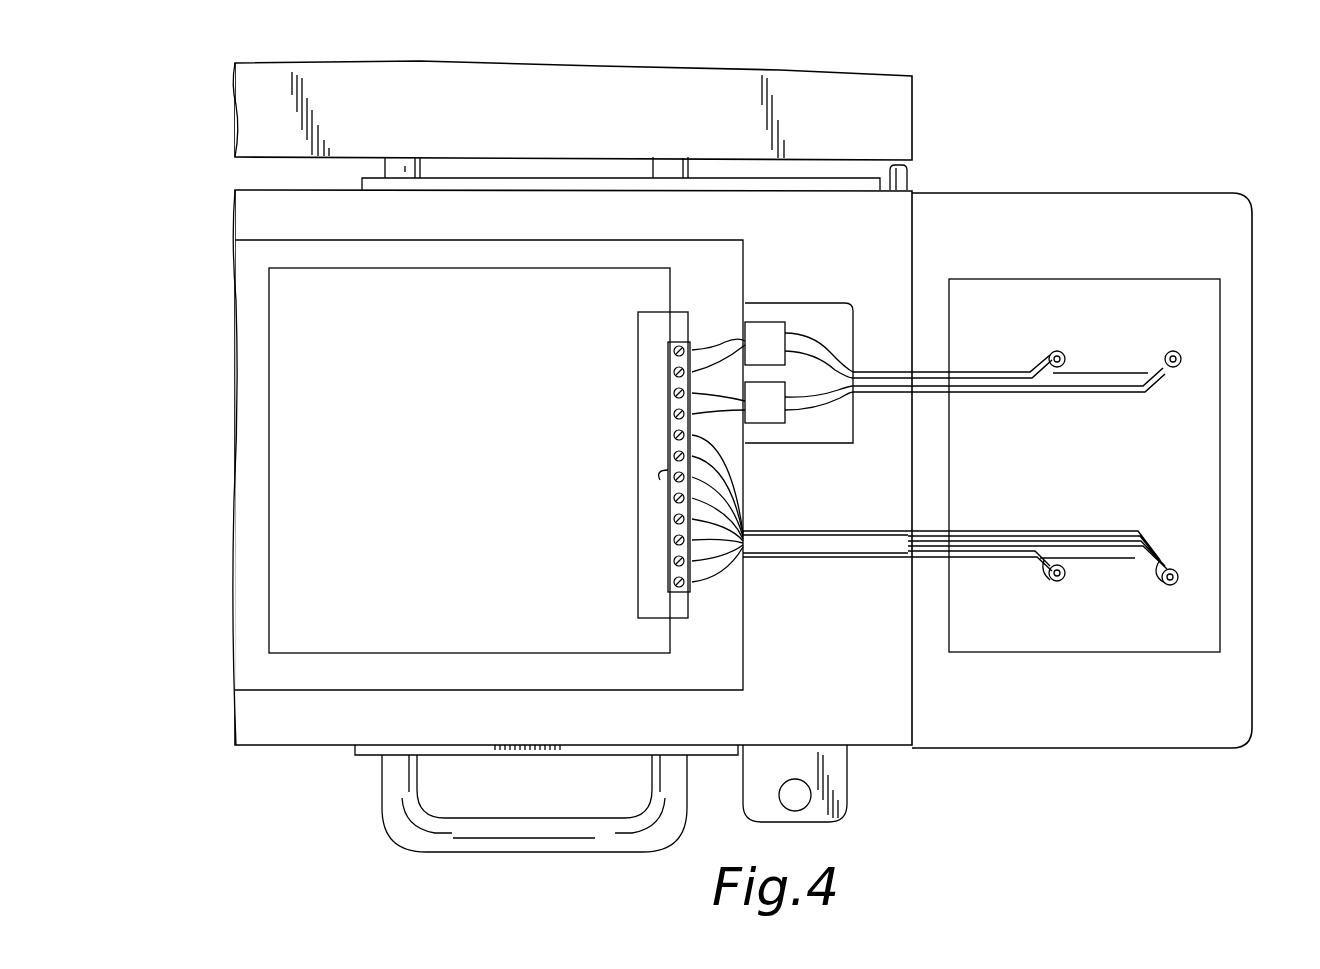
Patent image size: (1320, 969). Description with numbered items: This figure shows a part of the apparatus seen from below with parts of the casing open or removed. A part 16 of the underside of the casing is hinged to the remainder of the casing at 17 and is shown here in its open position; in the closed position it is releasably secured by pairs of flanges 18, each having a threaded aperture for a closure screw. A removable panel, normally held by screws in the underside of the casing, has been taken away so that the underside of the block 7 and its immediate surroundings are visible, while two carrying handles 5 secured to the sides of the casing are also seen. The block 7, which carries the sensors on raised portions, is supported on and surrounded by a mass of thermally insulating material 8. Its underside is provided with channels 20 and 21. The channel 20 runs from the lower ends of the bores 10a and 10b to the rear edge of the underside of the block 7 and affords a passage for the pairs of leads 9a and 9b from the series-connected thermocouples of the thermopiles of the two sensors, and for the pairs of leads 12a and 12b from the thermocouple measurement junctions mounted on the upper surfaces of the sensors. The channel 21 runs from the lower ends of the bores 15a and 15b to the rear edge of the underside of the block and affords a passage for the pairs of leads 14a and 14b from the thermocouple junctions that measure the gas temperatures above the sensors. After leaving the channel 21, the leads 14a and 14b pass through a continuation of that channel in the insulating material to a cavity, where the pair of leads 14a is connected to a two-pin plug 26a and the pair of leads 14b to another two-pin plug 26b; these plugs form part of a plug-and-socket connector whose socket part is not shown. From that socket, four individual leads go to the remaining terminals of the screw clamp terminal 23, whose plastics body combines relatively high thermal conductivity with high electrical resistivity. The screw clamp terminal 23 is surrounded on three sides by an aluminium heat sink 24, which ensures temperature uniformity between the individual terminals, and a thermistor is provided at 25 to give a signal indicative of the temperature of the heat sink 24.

The carrying handle 5 is at (393, 163).
The block 7 is at (1236, 462).
The thermally insulating material 8 is at (955, 257).
The pair of leads 9a is at (1155, 545).
The pair of leads 9b is at (989, 553).
The bore 10a is at (1180, 577).
The bore 10b is at (1062, 579).
The pair of leads 12a is at (1163, 562).
The pair of leads 12b is at (1022, 559).
The pair of leads 14a is at (1120, 394).
The pair of leads 14b is at (978, 376).
The bore 15a is at (1176, 351).
The bore 15b is at (1060, 351).
The hinged part of the casing underside 16 is at (856, 133).
The hinge 17 is at (908, 175).
The flange 18 is at (838, 787).
The channel 20 is at (1128, 552).
The channel 21 is at (1104, 380).
The screw clamp terminal 23 is at (667, 348).
The aluminium heat sink 24 is at (642, 355).
The thermistor 25 is at (660, 478).
The 2-pin plug 26a is at (768, 413).
The 2-pin plug 26b is at (768, 332).